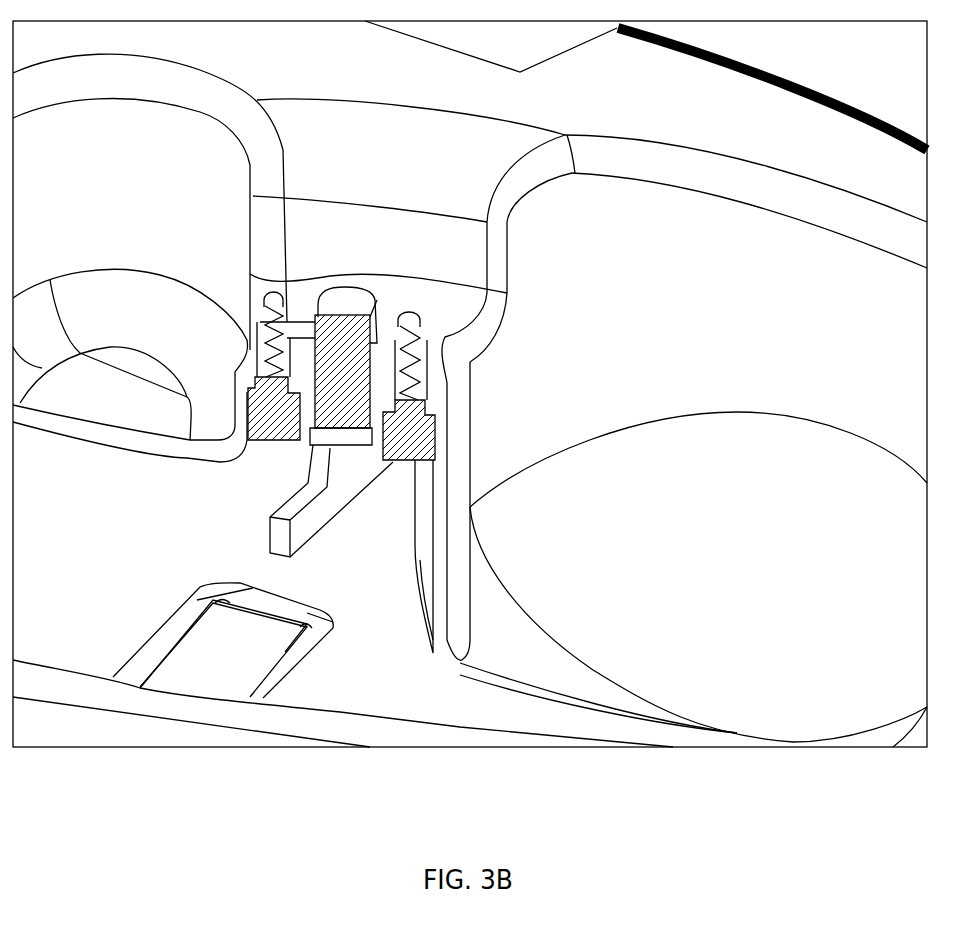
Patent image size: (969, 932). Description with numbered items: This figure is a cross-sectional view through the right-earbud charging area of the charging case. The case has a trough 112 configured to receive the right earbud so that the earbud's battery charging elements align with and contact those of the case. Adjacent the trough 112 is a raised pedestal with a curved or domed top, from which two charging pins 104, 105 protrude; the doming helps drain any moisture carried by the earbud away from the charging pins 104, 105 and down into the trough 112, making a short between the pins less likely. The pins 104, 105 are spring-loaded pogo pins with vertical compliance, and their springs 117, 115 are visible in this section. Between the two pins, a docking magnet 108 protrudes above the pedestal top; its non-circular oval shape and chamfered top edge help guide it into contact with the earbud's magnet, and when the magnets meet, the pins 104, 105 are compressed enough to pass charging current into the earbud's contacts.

The charging pin 104 is at (260, 300).
The spring 117 is at (250, 339).
The docking magnet 108 is at (353, 296).
The charging pin 105 is at (413, 324).
The spring 115 is at (411, 373).
The trough 112 is at (674, 551).